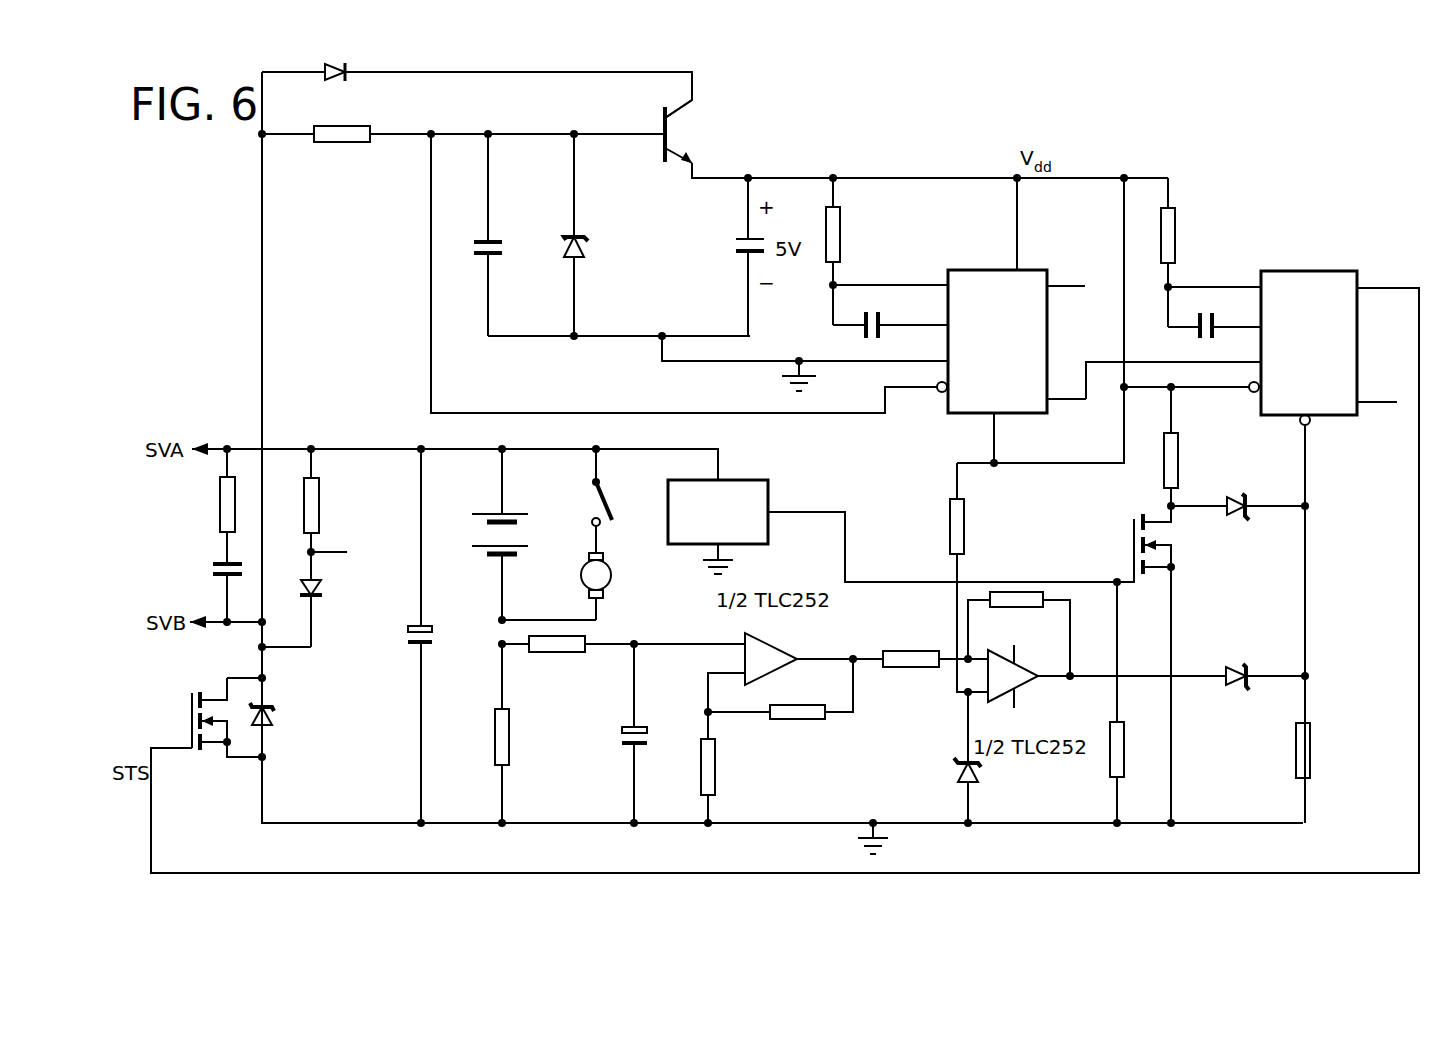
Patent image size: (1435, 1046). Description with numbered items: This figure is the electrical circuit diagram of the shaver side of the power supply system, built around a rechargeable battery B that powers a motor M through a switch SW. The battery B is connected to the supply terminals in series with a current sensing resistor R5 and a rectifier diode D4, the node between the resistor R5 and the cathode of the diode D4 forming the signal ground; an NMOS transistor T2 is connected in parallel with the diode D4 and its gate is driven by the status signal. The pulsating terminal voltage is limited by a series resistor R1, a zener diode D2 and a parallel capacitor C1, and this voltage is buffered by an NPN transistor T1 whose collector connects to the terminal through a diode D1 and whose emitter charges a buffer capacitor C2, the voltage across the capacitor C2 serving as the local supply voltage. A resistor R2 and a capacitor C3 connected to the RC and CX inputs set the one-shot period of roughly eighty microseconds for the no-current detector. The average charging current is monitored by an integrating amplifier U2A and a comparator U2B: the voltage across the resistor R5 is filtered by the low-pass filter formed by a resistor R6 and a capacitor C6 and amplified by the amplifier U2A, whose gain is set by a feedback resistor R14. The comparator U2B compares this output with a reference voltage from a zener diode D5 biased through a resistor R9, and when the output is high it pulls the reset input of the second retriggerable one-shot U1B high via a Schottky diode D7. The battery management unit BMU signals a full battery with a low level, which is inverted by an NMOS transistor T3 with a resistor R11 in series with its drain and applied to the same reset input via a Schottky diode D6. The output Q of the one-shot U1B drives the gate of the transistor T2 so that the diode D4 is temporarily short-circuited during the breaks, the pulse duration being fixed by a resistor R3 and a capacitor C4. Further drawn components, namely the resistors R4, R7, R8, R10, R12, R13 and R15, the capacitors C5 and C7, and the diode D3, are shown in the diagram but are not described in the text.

The diode D1 is at (330, 77).
The series resistor R1 is at (339, 142).
The NPN transistor T1 is at (678, 136).
The capacitor C1 is at (481, 240).
The zener diode D2 is at (568, 240).
The buffer capacitor C2 is at (738, 250).
The resistor R2 is at (840, 218).
The capacitor C3 is at (864, 332).
The second retriggerable one-shot U1B is at (1152, 342).
The resistor R3 is at (1175, 218).
The capacitor C4 is at (1197, 336).
The resistor R11 is at (1178, 442).
The Schottky diode D6 is at (1232, 496).
The NMOS transistor T3 is at (1163, 537).
The resistor R9 is at (964, 518).
The resistor R10 is at (1032, 592).
The comparator U2B is at (1012, 672).
The resistor R8 is at (908, 651).
The zener diode D5 is at (958, 776).
The resistor R12 is at (1108, 772).
The Schottky diode D7 is at (1232, 686).
The resistor R13 is at (1310, 748).
The resistor R15 is at (220, 503).
The capacitor C7 is at (213, 566).
The resistor R4 is at (319, 508).
The diode D3 is at (320, 584).
The capacitor C5 is at (410, 640).
The battery B is at (488, 512).
The switch SW is at (606, 490).
The motor M is at (611, 575).
The battery management unit BMU is at (744, 484).
The low-pass filter resistor R6 is at (560, 652).
The current sensing resistor R5 is at (495, 733).
The low-pass filter capacitor C6 is at (622, 744).
The integrating amplifier U2A is at (774, 652).
The resistor R7 is at (701, 772).
The feedback resistor R14 is at (786, 719).
The rectifier diode D4 is at (275, 715).
The NMOS transistor T2 is at (213, 751).